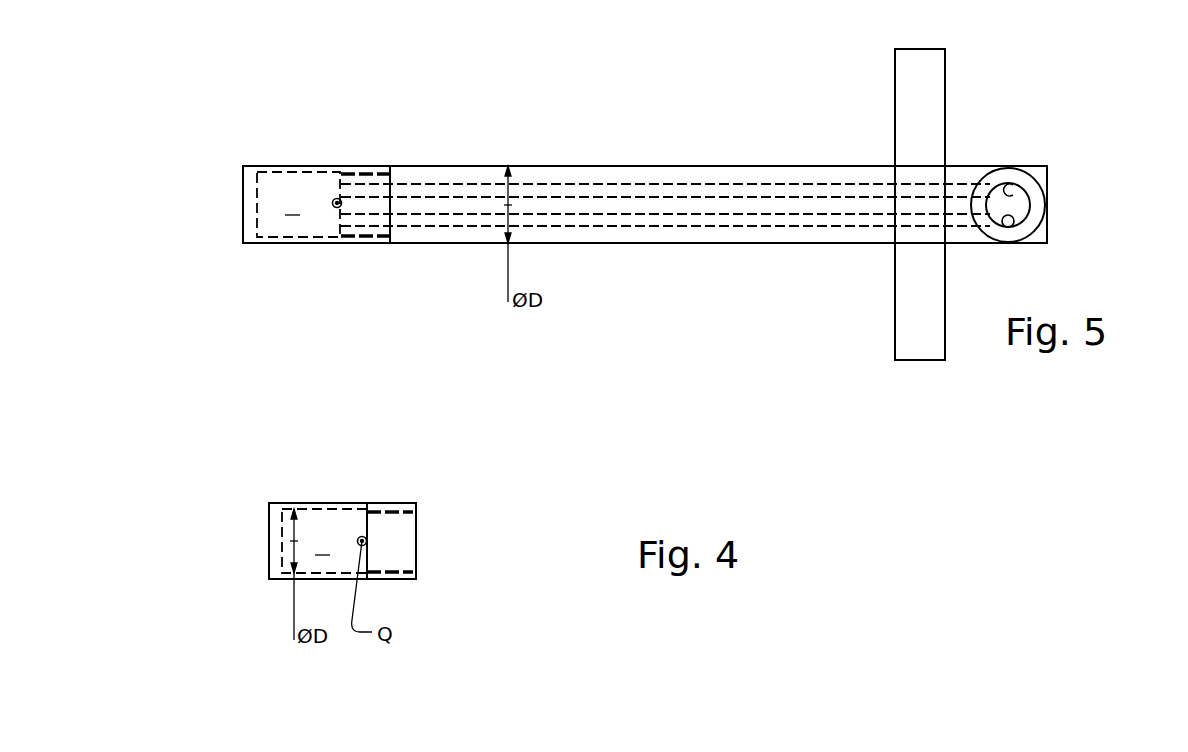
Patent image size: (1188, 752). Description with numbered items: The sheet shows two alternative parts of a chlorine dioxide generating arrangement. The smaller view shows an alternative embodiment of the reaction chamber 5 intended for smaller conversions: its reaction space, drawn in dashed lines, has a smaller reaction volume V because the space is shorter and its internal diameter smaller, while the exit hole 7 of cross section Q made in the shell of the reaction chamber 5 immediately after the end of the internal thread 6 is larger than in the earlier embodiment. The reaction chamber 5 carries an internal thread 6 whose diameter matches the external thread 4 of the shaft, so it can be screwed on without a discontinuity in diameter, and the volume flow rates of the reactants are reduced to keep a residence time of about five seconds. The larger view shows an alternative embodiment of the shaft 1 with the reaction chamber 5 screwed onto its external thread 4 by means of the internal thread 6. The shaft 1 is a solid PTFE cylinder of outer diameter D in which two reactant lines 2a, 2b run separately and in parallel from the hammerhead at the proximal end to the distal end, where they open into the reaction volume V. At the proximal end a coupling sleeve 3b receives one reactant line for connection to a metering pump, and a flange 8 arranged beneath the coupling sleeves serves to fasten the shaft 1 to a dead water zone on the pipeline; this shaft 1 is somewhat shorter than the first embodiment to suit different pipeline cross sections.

In FIG. 5, the shaft 1 is at (543, 123).
In FIG. 5, the reactant line 2a is at (815, 192).
In FIG. 5, the reactant line 2b is at (590, 219).
In FIG. 5, the coupling sleeve 3b is at (1013, 236).
In FIG. 5, the external thread 4 is at (341, 203).
In FIG. 5, the reaction chamber 5 is at (264, 128).
In FIG. 4, the reaction chamber 5 is at (218, 517).
In FIG. 4, the internal thread 6 is at (405, 553).
In FIG. 4, the exit hole 7 is at (362, 541).
In FIG. 5, the flange 8 is at (917, 78).